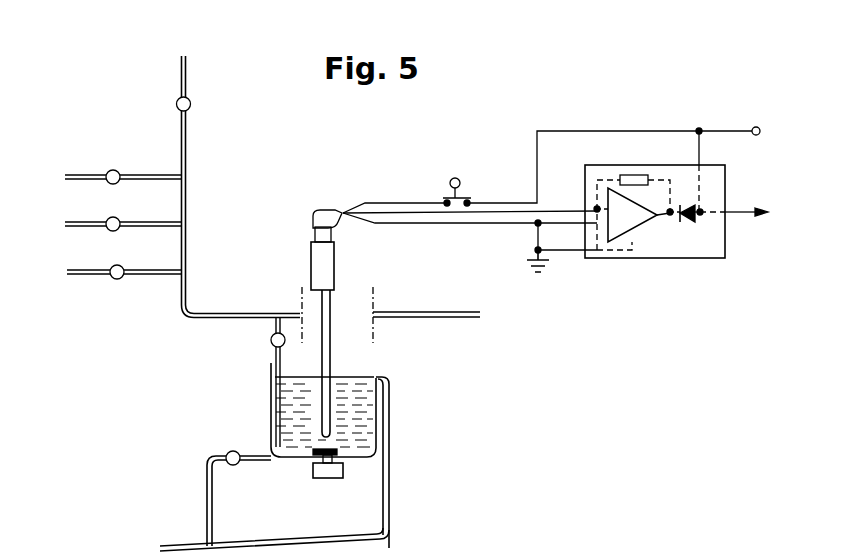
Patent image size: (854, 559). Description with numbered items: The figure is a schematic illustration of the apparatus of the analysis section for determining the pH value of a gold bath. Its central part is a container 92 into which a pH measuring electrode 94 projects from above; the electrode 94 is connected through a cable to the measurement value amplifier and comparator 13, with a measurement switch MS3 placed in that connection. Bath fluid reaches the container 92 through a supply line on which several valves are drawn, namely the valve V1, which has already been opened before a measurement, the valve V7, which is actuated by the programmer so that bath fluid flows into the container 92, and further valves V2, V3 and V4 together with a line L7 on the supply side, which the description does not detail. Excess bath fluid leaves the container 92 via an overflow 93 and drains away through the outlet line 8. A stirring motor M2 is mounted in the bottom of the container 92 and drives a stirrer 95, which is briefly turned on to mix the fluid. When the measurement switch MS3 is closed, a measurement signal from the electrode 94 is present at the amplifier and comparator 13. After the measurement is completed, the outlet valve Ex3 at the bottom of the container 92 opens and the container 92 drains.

The supply line L7 is at (181, 70).
The valve V1 is at (117, 279).
The valve V2 is at (114, 217).
The valve V3 is at (114, 170).
The valve V4 is at (190, 104).
The valve V7 is at (271, 341).
The measurement switch MS3 is at (455, 178).
The measurement value amplifier and comparator 13 is at (718, 177).
The pH measuring electrode 94 is at (330, 322).
The overflow 93 is at (380, 378).
The container 92 is at (362, 409).
The stirrer 95 is at (340, 452).
The stirring motor M2 is at (326, 474).
The outlet line 8 is at (390, 497).
The outlet valve Ex3 is at (233, 465).